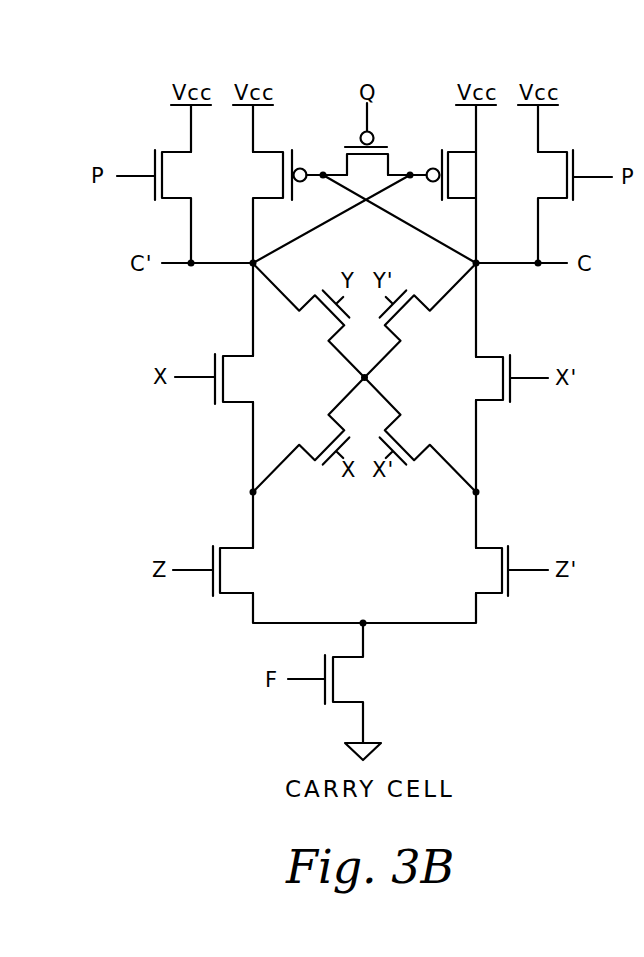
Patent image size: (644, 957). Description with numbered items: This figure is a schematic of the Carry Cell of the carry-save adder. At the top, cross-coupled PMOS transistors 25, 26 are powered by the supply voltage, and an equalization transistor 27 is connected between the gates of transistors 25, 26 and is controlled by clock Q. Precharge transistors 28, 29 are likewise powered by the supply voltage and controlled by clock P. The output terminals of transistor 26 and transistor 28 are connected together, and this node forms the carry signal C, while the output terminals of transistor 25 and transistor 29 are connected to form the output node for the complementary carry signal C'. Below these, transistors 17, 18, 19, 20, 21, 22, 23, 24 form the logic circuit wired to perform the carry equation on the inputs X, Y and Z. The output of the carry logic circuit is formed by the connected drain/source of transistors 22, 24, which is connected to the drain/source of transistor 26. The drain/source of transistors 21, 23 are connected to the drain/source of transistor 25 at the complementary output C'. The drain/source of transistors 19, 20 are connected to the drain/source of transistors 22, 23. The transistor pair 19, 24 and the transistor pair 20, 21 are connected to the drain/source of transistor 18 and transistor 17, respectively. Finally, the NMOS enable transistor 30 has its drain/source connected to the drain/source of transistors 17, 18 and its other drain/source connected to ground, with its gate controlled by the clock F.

The logic circuit transistor 17 is at (228, 548).
The logic circuit transistor 18 is at (497, 548).
The logic circuit transistor 19 is at (424, 458).
The logic circuit transistor 20 is at (305, 458).
The logic circuit transistor 21 is at (228, 355).
The logic circuit transistor 22 is at (419, 304).
The logic circuit transistor 23 is at (310, 304).
The logic circuit transistor 24 is at (497, 356).
The cross-coupled PMOS transistor 25 is at (272, 151).
The cross-coupled PMOS transistor 26 is at (457, 151).
The equalization transistor 27 is at (391, 158).
The precharge transistor 28 is at (556, 152).
The precharge transistor 29 is at (174, 151).
The NMOS enable transistor 30 is at (337, 704).